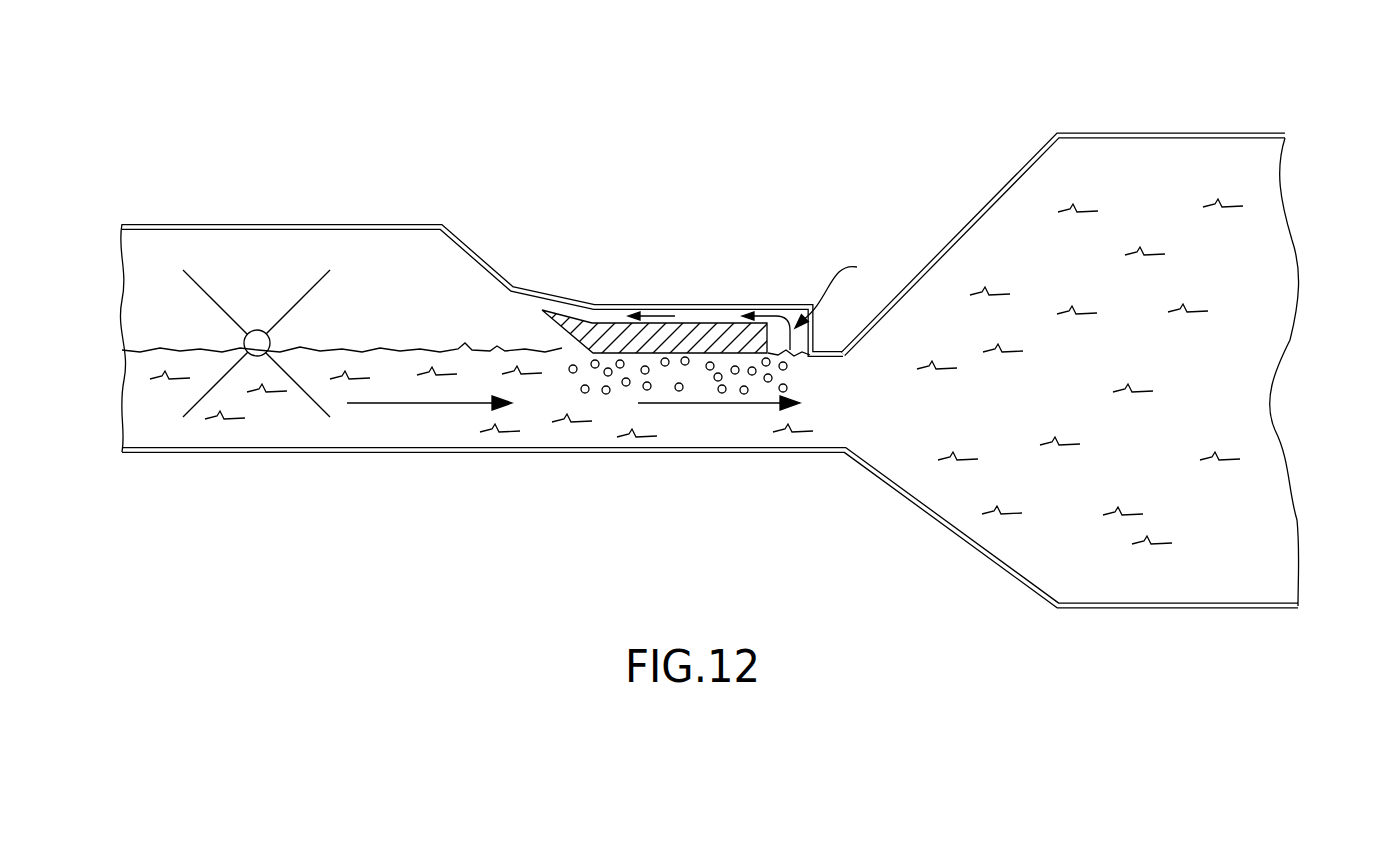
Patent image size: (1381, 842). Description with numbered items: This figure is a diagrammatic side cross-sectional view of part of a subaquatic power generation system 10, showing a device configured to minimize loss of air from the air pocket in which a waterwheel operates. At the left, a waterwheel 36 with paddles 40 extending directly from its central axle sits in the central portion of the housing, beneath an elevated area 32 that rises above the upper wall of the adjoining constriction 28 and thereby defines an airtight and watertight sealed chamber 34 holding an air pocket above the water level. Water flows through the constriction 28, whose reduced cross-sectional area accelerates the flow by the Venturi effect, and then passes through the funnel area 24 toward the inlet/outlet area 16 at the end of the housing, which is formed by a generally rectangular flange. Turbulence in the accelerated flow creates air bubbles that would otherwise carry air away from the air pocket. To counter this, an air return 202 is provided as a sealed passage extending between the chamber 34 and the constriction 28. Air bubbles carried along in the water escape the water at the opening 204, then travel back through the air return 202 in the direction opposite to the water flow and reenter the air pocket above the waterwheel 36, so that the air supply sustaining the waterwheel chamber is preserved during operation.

The subaquatic power generation system 10 is at (790, 80).
The inlet/outlet area 16 is at (1190, 335).
The funnel area 24 is at (993, 240).
The constriction 28 is at (682, 428).
The elevated area 32 is at (201, 208).
The sealed chamber 34 is at (429, 275).
The waterwheel 36 is at (106, 292).
The paddle 40 is at (307, 291).
The air return 202 is at (713, 322).
The opening 204 is at (809, 374).